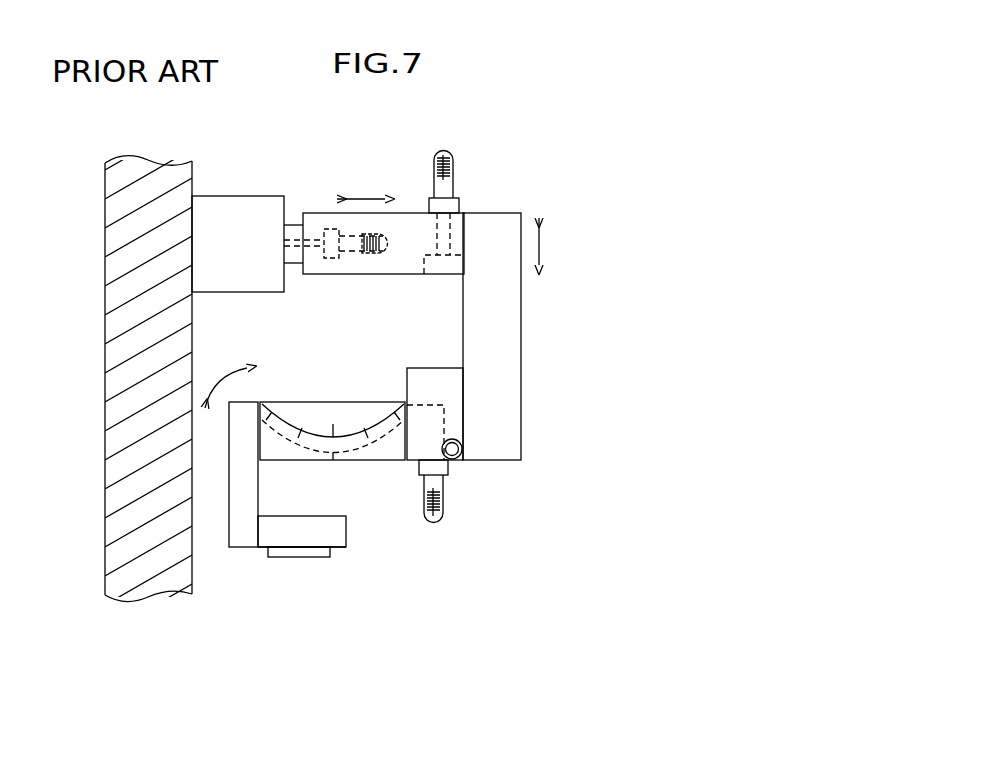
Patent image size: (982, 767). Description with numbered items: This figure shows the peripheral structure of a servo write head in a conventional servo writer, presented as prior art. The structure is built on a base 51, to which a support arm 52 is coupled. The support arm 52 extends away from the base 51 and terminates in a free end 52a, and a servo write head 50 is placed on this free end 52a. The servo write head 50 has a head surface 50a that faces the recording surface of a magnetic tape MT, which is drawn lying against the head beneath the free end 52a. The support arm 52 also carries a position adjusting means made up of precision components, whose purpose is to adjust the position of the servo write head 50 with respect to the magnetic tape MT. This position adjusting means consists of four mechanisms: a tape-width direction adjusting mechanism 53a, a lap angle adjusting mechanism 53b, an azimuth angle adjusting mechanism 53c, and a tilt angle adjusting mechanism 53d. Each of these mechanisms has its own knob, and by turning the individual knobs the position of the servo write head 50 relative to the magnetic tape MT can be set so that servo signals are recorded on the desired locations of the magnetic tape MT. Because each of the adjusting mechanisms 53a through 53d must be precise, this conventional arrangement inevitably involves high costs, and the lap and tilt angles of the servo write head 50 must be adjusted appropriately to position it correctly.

The base 51 is at (118, 352).
The support arm 52 is at (577, 327).
The free end 52a is at (240, 568).
The servo write head 50 is at (348, 531).
The head surface 50a is at (287, 557).
The magnetic tape MT is at (313, 553).
The tape-width direction adjusting mechanism 53a is at (313, 212).
The lap angle adjusting mechanism 53b is at (458, 170).
The azimuth angle adjusting mechanism 53c is at (472, 451).
The tilt angle adjusting mechanism 53d is at (452, 506).